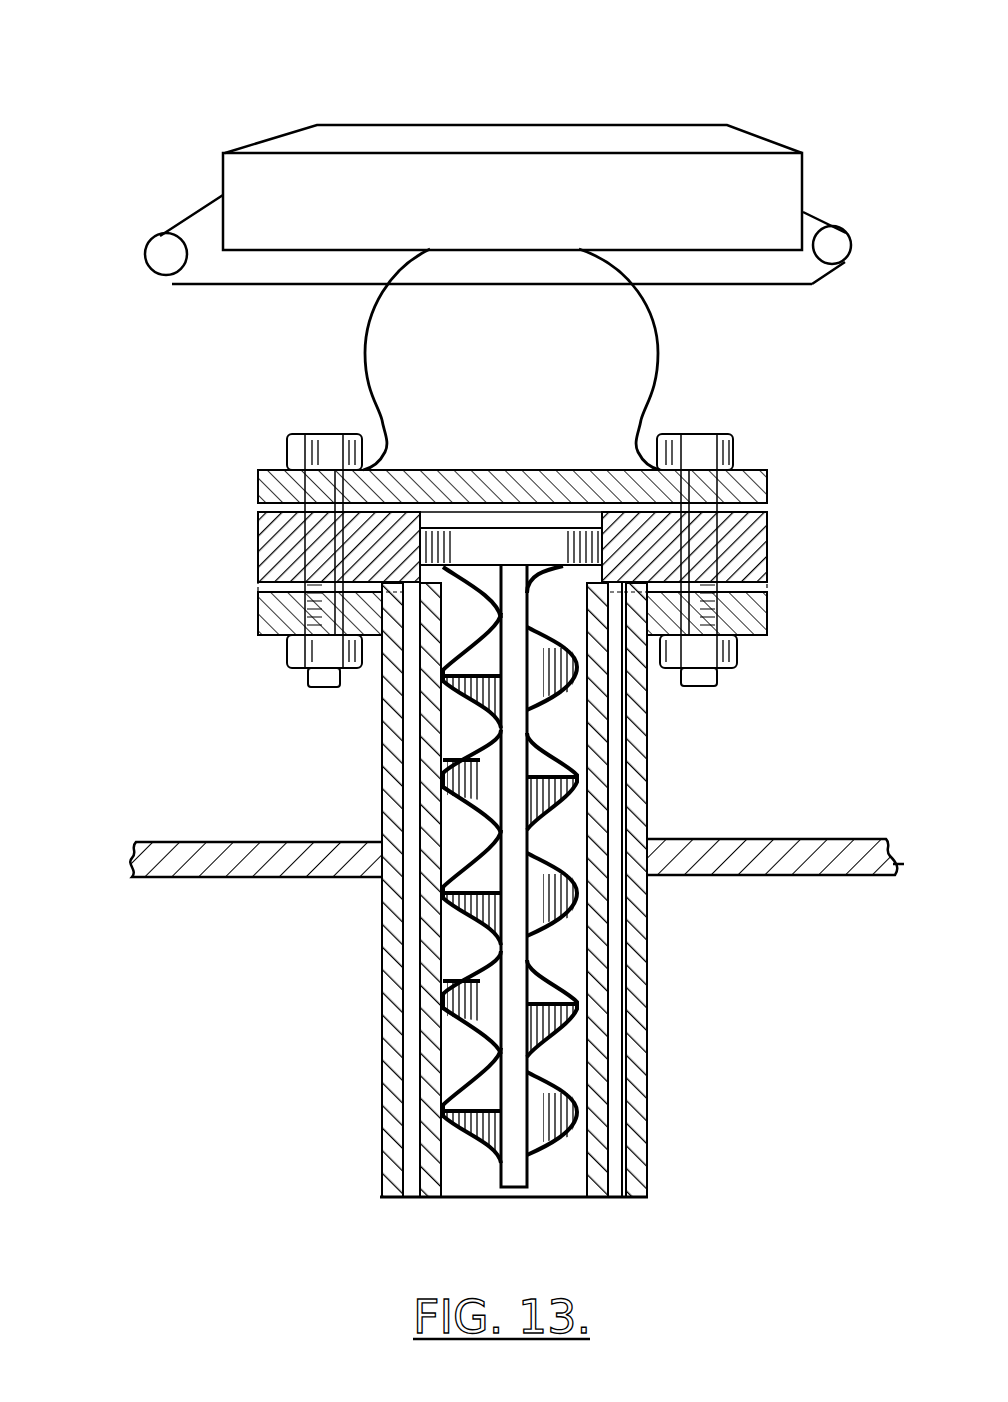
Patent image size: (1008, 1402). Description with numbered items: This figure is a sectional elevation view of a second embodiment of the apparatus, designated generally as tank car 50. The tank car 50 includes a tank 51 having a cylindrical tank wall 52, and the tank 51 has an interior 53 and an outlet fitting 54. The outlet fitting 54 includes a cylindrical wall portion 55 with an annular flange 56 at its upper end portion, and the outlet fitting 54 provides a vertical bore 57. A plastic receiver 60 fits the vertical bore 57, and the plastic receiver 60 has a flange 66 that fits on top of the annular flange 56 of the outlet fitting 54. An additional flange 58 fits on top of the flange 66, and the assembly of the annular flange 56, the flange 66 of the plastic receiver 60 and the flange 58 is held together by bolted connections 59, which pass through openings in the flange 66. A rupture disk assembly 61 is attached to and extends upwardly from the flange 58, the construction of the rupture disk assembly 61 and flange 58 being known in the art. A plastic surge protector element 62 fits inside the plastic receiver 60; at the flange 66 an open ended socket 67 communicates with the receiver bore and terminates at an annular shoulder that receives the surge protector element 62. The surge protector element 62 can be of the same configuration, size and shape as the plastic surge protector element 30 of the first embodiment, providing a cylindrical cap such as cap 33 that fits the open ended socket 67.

The tank car 50 is at (246, 64).
The rupture disk assembly 61 is at (515, 365).
The bolted connections 59 is at (317, 436).
The open ended socket 67 is at (540, 470).
The flange 58 is at (765, 482).
The flange 66 is at (258, 538).
The plastic receiver 60 is at (765, 542).
The annular flange 56 is at (258, 620).
The cylindrical cap 33 is at (527, 560).
The plastic surge protector element 30 is at (608, 876).
The plastic surge protector element 62 is at (580, 945).
The tank 51 is at (760, 840).
The cylindrical tank wall 52 is at (132, 863).
The interior 53 is at (288, 940).
The outlet fitting 54 is at (382, 1112).
The cylindrical wall portion 55 is at (632, 1127).
The vertical bore 57 is at (410, 1200).